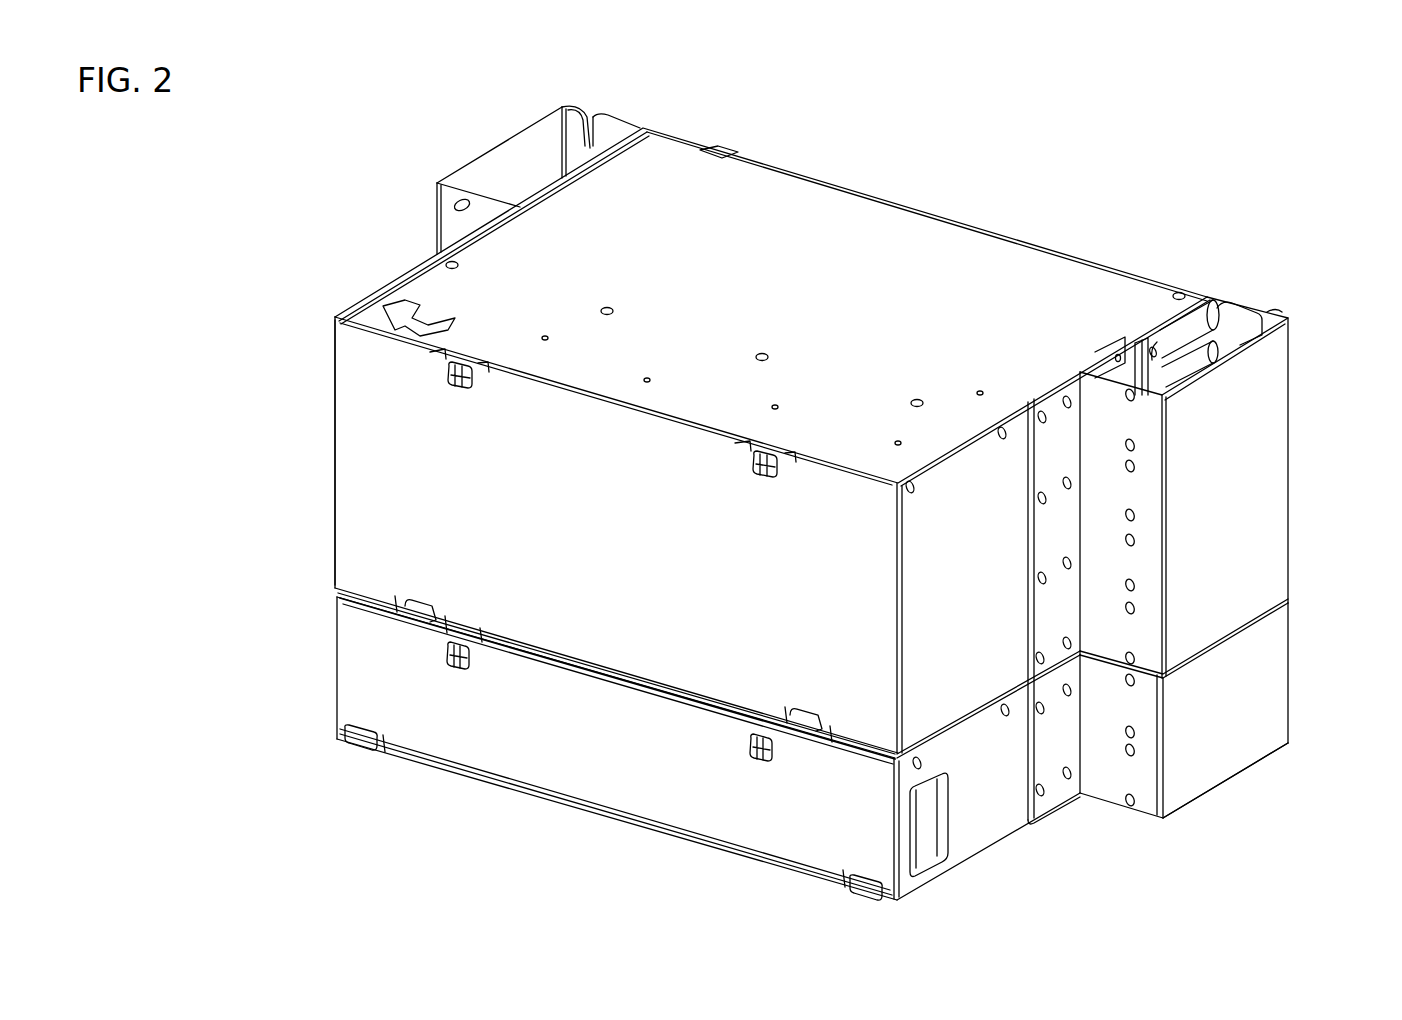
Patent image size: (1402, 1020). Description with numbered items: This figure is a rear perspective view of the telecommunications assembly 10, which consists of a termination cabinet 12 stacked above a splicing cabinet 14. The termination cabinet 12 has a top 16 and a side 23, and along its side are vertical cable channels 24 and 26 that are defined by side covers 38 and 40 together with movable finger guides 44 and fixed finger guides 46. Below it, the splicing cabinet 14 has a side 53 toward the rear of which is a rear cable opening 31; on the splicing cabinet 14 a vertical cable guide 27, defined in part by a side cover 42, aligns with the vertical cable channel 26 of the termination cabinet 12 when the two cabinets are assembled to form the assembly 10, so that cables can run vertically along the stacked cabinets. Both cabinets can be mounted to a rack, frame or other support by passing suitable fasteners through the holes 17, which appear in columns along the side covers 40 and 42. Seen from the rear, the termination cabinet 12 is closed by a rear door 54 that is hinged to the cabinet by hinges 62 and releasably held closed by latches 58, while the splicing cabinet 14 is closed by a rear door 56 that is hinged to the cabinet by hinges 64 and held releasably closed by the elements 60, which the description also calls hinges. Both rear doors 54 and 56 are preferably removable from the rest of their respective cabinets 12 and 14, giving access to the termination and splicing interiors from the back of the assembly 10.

The telecommunications assembly 10 is at (315, 186).
The termination cabinet 12 is at (310, 463).
The splicing cabinet 14 is at (292, 653).
The top 16 is at (962, 238).
The holes 17 is at (1138, 397).
The side 23 is at (977, 574).
The vertical cable channel 24 is at (505, 172).
The vertical cable channel 26 is at (1223, 302).
The vertical cable guide 27 is at (1220, 792).
The rear cable opening 31 is at (925, 843).
The side cover 38 is at (448, 174).
The side cover 40 is at (1262, 464).
The side cover 42 is at (1263, 695).
The movable finger guides 44 is at (1243, 322).
The fixed finger guides 46 is at (612, 130).
The side 53 is at (1003, 794).
The rear door 54 is at (357, 372).
The rear door 56 is at (352, 703).
The latches 58 is at (752, 468).
The hinges 60 is at (748, 744).
The hinges 62 is at (805, 728).
The hinges 64 is at (862, 893).